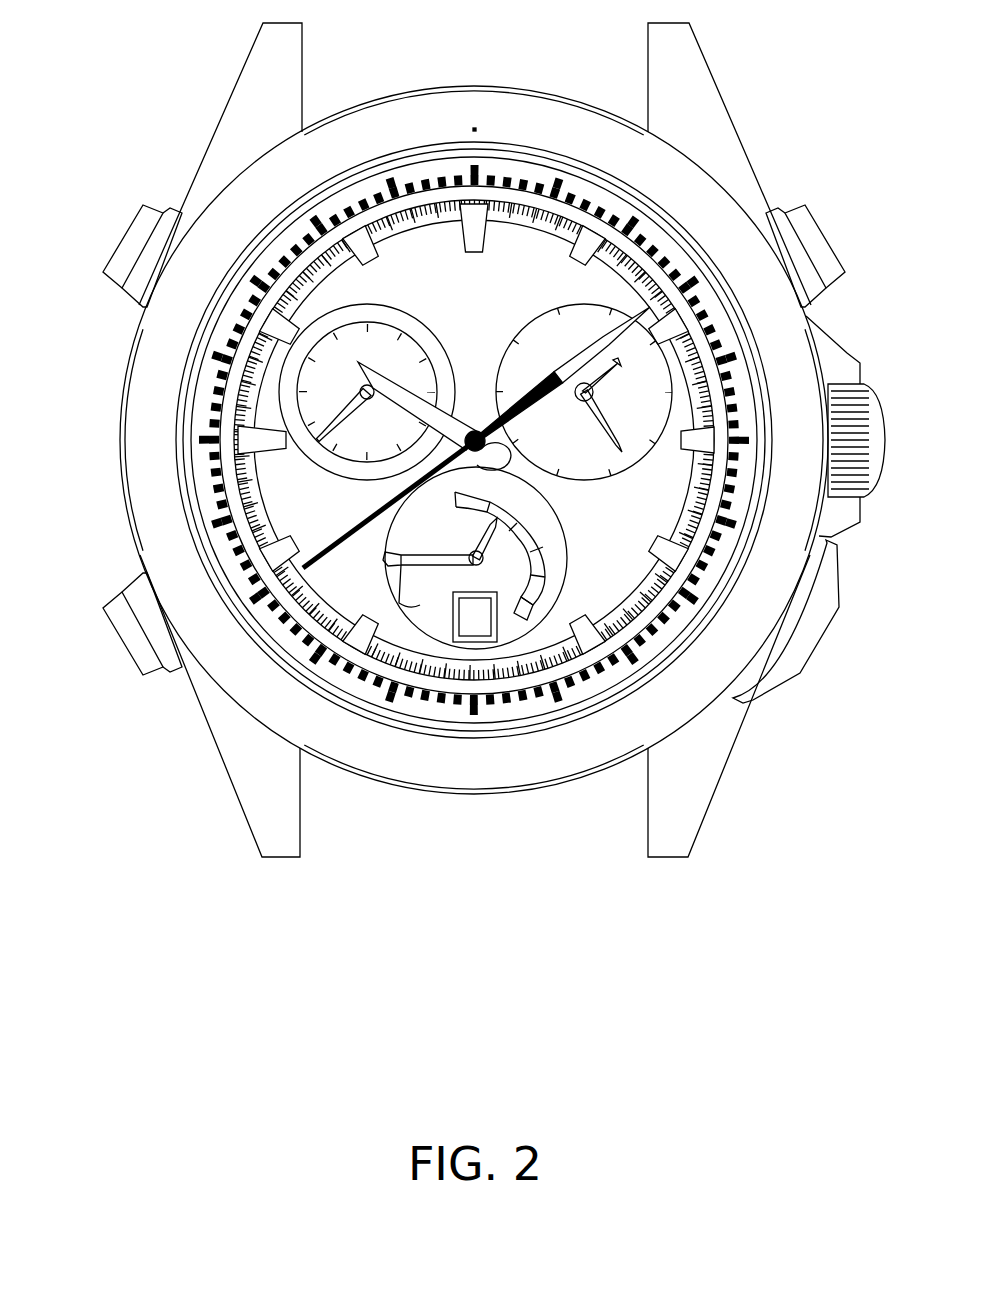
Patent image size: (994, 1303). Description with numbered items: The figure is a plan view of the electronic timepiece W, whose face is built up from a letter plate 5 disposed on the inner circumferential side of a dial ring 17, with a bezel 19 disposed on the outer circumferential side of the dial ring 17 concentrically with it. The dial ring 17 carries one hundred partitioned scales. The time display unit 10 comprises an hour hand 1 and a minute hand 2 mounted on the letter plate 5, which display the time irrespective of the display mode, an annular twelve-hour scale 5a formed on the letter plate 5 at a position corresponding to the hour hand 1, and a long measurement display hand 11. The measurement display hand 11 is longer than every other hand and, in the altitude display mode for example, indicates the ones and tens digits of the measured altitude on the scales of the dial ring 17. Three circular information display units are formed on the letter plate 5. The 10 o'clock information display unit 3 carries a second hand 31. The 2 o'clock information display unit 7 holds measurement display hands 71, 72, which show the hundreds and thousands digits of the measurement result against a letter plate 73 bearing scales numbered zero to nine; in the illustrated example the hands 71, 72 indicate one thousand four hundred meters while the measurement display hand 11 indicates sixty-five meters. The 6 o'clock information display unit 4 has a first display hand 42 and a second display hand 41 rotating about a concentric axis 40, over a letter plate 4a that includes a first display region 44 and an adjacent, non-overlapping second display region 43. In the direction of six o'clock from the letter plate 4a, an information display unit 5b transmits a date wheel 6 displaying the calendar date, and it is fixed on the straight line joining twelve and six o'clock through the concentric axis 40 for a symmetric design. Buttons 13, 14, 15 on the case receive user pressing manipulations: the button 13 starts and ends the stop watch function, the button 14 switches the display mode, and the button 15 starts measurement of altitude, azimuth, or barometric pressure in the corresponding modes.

The electronic timepiece W is at (778, 112).
The hour hand 1 is at (415, 400).
The minute hand 2 is at (599, 350).
The 10 o'clock information display unit 3 is at (278, 407).
The 6 o'clock information display unit 4 is at (440, 640).
The letter plate 4a is at (545, 630).
The letter plate 5 is at (750, 700).
The scale 5a is at (275, 560).
The information display unit 5b is at (512, 625).
The date wheel 6 is at (470, 645).
The 2 o'clock information display unit 7 is at (768, 350).
The time display unit 10 is at (527, 257).
The measurement display hand 11 is at (340, 540).
The button 13 is at (130, 226).
The button 14 is at (105, 632).
The button 15 is at (830, 230).
The dial ring 17 is at (270, 620).
The bezel 19 is at (130, 462).
The second hand 31 is at (340, 410).
The concentric axis 40 is at (473, 552).
The second display hand 41 is at (393, 555).
The first display hand 42 is at (540, 540).
The second display region 43 is at (392, 600).
The first display region 44 is at (562, 612).
The measurement display hand 71 is at (742, 325).
The measurement display hand 72 is at (833, 382).
The letter plate 73 is at (612, 472).